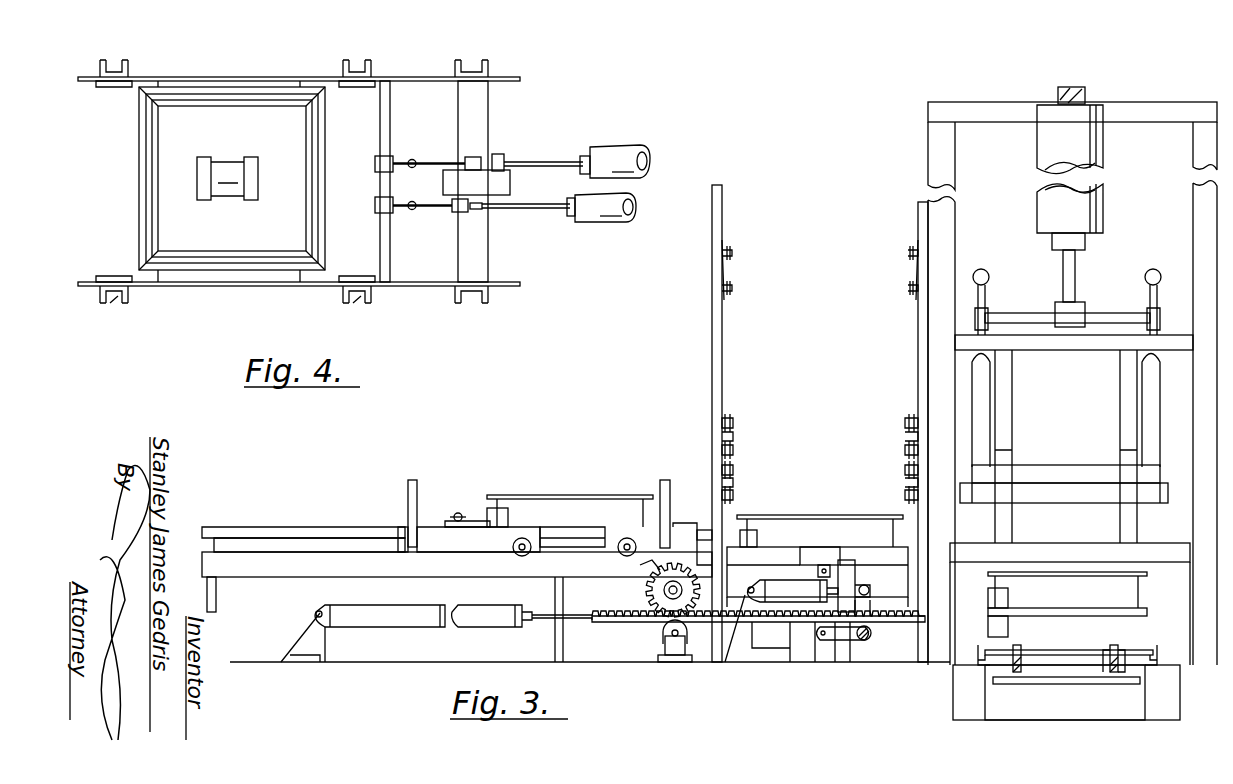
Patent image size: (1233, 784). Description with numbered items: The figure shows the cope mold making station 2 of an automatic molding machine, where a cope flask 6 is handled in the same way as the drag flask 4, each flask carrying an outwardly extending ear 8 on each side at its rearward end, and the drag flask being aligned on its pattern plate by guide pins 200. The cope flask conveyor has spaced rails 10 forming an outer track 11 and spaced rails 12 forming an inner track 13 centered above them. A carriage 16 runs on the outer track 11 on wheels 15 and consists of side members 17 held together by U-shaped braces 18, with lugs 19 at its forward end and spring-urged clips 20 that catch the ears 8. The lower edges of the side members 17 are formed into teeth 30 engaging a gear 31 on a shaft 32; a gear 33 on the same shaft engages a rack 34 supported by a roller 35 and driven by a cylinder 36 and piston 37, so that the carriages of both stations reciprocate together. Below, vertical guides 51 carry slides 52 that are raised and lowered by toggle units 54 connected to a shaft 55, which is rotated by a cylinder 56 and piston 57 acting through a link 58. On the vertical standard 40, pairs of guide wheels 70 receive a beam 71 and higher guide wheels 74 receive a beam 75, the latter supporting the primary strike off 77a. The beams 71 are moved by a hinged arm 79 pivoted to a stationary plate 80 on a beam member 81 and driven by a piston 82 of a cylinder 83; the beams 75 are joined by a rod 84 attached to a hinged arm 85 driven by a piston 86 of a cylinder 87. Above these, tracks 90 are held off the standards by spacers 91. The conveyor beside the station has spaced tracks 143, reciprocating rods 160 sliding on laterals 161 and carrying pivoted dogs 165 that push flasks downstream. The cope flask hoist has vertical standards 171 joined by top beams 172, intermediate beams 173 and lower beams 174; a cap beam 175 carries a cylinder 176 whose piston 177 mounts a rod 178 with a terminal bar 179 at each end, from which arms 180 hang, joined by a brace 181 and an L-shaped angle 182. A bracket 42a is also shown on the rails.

In FIG. 3, the cope mold making station 2 is at (909, 680).
In FIG. 4, the flask 4 is at (162, 142).
In FIG. 3, the flask 4 is at (1069, 640).
In FIG. 3, the flask 6 is at (576, 495).
In FIG. 3, the ear 8 is at (509, 517).
In FIG. 3, the rails 10 is at (268, 578).
In FIG. 3, the outer track 11 is at (299, 589).
In FIG. 3, the rails 12 is at (320, 527).
In FIG. 3, the inner track 13 is at (258, 527).
In FIG. 3, the wheels 15 is at (512, 545).
In FIG. 3, the carriage 16 is at (395, 517).
In FIG. 3, the side members 17 is at (432, 530).
In FIG. 3, the U-shaped braces 18 is at (413, 480).
In FIG. 3, the lugs 19 is at (690, 522).
In FIG. 3, the clips 20 is at (475, 515).
In FIG. 3, the teeth 30 is at (648, 576).
In FIG. 3, the gear 31 is at (648, 592).
In FIG. 3, the shaft 32 is at (668, 596).
In FIG. 3, the gear 33 is at (656, 598).
In FIG. 3, the rack 34 is at (698, 624).
In FIG. 3, the roller 35 is at (662, 648).
In FIG. 3, the cylinder 36 is at (412, 628).
In FIG. 3, the piston 37 is at (575, 620).
In FIG. 3, the vertical standard 40 is at (712, 364).
In FIG. 4, the bracket 42a is at (124, 303).
In FIG. 3, the vertical guides 51 is at (856, 577).
In FIG. 3, the slide 52 is at (810, 556).
In FIG. 3, the toggle unit 54 is at (835, 645).
In FIG. 3, the shaft 55 is at (866, 641).
In FIG. 3, the cylinder 56 is at (770, 600).
In FIG. 3, the piston 57 is at (846, 575).
In FIG. 3, the link 58 is at (870, 590).
In FIG. 3, the guide wheels 70 is at (735, 470).
In FIG. 3, the beam 71 is at (735, 483).
In FIG. 4, the guide wheels 74 is at (358, 88).
In FIG. 3, the guide wheels 74 is at (735, 420).
In FIG. 4, the beam 75 is at (410, 78).
In FIG. 3, the beam 75 is at (734, 437).
In FIG. 4, the primary strike off 77a is at (138, 190).
In FIG. 4, the hinged arm 79 is at (432, 210).
In FIG. 4, the stationary plate 80 is at (511, 183).
In FIG. 4, the beam member 81 is at (489, 134).
In FIG. 4, the piston 82 is at (540, 210).
In FIG. 4, the cylinder 83 is at (610, 222).
In FIG. 4, the rod 84 is at (391, 133).
In FIG. 4, the hinged arm 85 is at (464, 162).
In FIG. 4, the piston 86 is at (530, 160).
In FIG. 4, the cylinder 87 is at (606, 148).
In FIG. 3, the tracks 90 is at (733, 288).
In FIG. 3, the spacers 91 is at (725, 292).
In FIG. 3, the spaced tracks 143 is at (978, 655).
In FIG. 3, the reciprocating rods 160 is at (1118, 675).
In FIG. 3, the laterals 161 is at (1050, 680).
In FIG. 3, the pivoted dogs 165 is at (1110, 648).
In FIG. 3, the vertical standards 171 is at (950, 165).
In FIG. 3, the top beams 172 is at (1155, 105).
In FIG. 3, the intermediate beams 173 is at (1062, 350).
In FIG. 3, the lower beams 174 is at (972, 555).
In FIG. 3, the cap beam 175 is at (1075, 88).
In FIG. 3, the cylinder 176 is at (1104, 152).
In FIG. 3, the piston 177 is at (1076, 282).
In FIG. 3, the rod 178 is at (1045, 318).
In FIG. 3, the terminal bar 179 is at (990, 300).
In FIG. 3, the arm 180 is at (985, 400).
In FIG. 3, the brace 181 is at (1062, 460).
In FIG. 3, the L-shaped angle 182 is at (1082, 500).
In FIG. 3, the guide pins 200 is at (1147, 608).